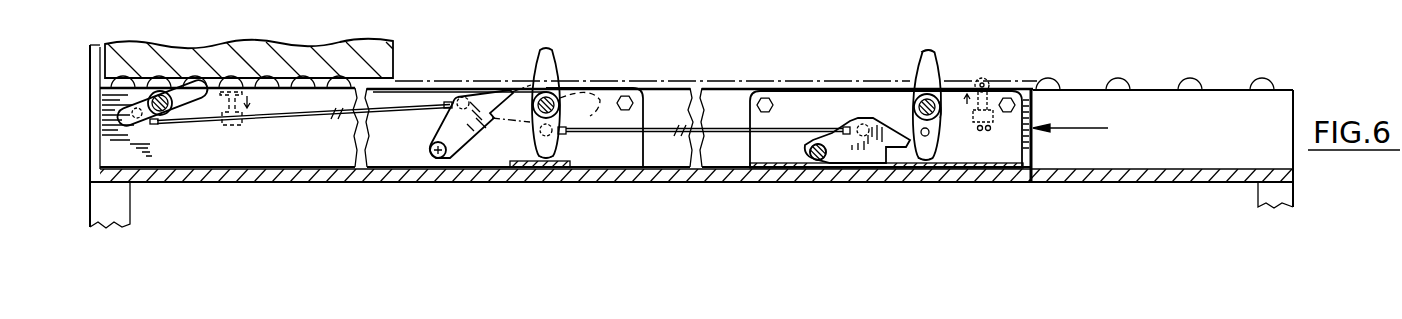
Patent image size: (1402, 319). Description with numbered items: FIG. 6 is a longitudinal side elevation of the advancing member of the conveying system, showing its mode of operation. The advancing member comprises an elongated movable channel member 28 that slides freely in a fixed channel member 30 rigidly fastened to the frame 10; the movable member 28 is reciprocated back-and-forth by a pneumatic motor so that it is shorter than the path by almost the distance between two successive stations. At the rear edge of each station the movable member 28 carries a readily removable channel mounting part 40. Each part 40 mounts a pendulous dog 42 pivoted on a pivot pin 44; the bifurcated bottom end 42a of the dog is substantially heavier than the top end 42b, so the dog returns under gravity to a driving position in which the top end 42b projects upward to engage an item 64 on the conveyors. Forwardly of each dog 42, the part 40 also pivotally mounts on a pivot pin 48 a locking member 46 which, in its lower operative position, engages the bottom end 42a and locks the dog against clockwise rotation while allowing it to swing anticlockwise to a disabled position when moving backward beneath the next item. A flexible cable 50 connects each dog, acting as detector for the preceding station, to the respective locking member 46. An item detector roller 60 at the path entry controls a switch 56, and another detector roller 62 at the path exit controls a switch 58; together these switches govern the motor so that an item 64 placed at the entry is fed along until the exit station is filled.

The frame 10 is at (1283, 194).
The movable channel member 28 is at (263, 167).
The fixed channel member 30 is at (335, 182).
The channel mounting part 40 is at (613, 155).
The pendulous dog 42 is at (152, 98).
The bifurcated bottom end 42a is at (547, 156).
The top end 42b is at (930, 60).
The pivot pin 44 is at (938, 110).
The locking member 46 is at (477, 102).
The pivot pin 48 is at (435, 158).
The flexible cable 50 is at (737, 133).
The switch 56 is at (1017, 127).
The switch 58 is at (240, 125).
The item detector roller 60 is at (990, 80).
The item detector roller 62 is at (238, 78).
The item 64 is at (172, 57).